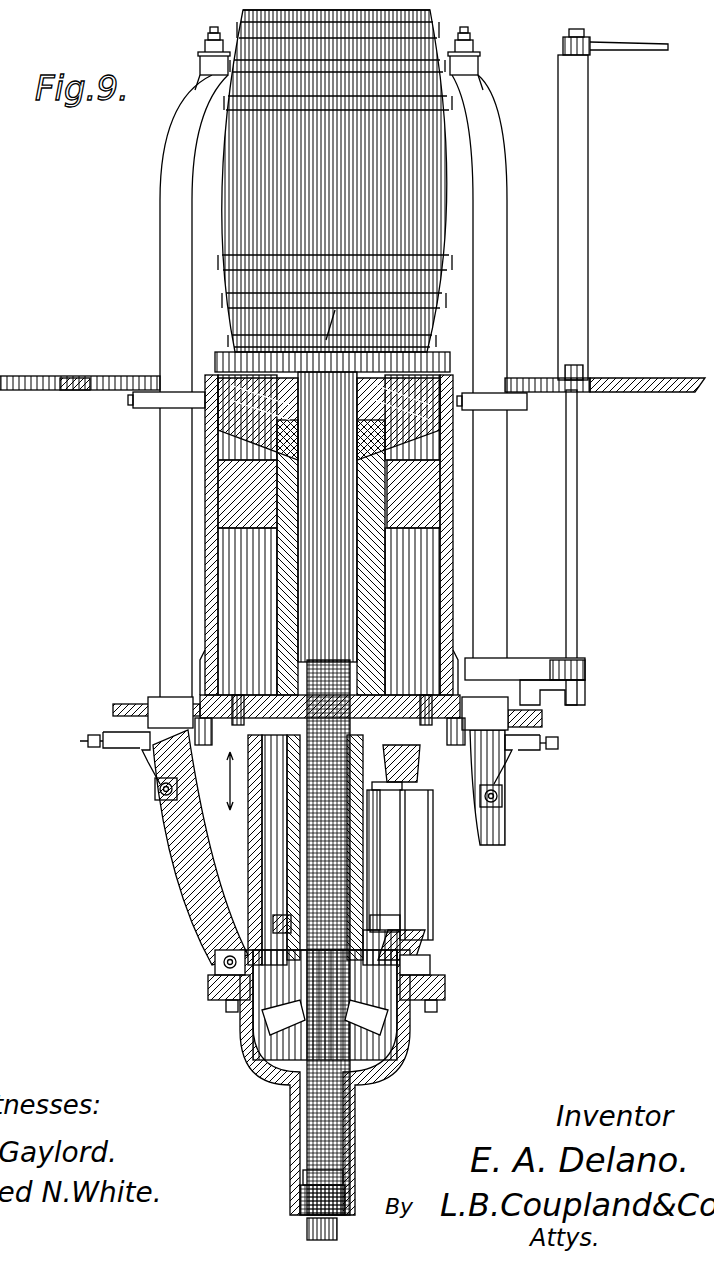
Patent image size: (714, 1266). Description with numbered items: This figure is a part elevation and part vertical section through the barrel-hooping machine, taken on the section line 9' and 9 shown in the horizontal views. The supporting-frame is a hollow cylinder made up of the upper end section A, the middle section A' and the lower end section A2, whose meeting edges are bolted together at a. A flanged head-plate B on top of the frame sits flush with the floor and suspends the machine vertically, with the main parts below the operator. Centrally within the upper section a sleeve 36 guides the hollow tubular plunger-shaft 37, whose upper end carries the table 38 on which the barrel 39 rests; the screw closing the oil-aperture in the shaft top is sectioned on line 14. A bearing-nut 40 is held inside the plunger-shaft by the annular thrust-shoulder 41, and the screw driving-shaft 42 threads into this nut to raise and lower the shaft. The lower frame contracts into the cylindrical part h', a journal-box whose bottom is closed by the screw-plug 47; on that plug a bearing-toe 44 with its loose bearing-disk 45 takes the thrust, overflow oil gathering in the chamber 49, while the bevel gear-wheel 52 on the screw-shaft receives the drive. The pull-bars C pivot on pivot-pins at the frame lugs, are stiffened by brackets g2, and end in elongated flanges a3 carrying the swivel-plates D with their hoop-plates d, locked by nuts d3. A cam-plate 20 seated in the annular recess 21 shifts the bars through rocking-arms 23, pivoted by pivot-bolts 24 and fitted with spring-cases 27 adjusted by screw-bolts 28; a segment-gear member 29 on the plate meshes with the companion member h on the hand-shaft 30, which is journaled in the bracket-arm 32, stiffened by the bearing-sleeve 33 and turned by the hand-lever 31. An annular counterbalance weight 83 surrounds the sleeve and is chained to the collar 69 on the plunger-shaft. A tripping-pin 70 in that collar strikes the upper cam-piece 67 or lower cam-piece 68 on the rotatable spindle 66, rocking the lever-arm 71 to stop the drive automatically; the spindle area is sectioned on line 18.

The barrel 39 is at (335, 181).
The section line 14 is at (332, 325).
The table 38 is at (442, 356).
The flanged head-plate B is at (518, 380).
The pull-bar C is at (150, 882).
The swivel-plate D is at (200, 66).
The hoop-plate d is at (205, 50).
The threaded nut d3 is at (210, 30).
The elongated flange a3 is at (348, 91).
The bearing-sleeve 33 is at (588, 273).
The hand-shaft 30 is at (584, 56).
The hand-lever 31 is at (634, 60).
The bracket g2 is at (140, 410).
The upper end section A is at (287, 546).
The annular counterbalance weight 83 is at (329, 494).
The sleeve 36 is at (280, 446).
The plunger-shaft 37 is at (246, 860).
The screw driving-shaft 42 is at (364, 1110).
The bolt a is at (212, 1027).
The cam-plate 20 is at (113, 708).
The rocking-arm 23 is at (328, 723).
The annular recess 21 is at (329, 735).
The spring-case 27 is at (321, 757).
The screw-bolt 28 is at (560, 762).
The pivot-bolt 24 is at (155, 789).
The segment-gear member 29 is at (518, 665).
The bracket-arm 32 is at (580, 668).
The segment-gear member h is at (560, 692).
The middle section A' is at (308, 850).
The section line 18 is at (240, 782).
The annular thrust-shoulder 41 is at (300, 806).
The bearing-nut 40 is at (305, 882).
The collar 69 is at (273, 922).
The upper cam-piece 67 is at (401, 763).
The lever-arm 71 is at (384, 856).
The rotatable spindle 66 is at (420, 892).
The tripping-pin 70 is at (384, 912).
The lower cam-piece 68 is at (425, 934).
The lower end section A2 is at (250, 1070).
The bevel gear-wheel 52 is at (272, 1078).
The chamber 49 is at (380, 1072).
The contracted cylindrical part h' is at (375, 1136).
The section line 9 9' is at (297, 962).
The section line 9 is at (308, 987).
The bearing-toe 44 is at (300, 1170).
The bearing-disk 45 is at (343, 1176).
The screw-plug 47 is at (307, 1230).